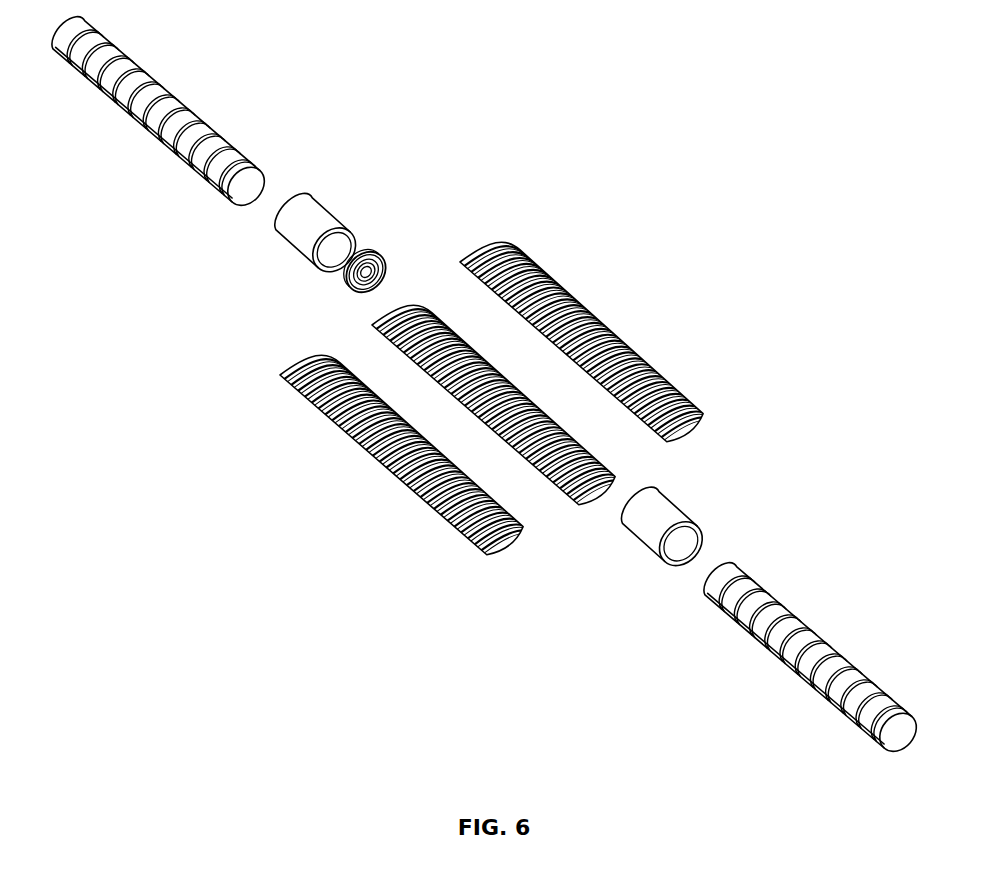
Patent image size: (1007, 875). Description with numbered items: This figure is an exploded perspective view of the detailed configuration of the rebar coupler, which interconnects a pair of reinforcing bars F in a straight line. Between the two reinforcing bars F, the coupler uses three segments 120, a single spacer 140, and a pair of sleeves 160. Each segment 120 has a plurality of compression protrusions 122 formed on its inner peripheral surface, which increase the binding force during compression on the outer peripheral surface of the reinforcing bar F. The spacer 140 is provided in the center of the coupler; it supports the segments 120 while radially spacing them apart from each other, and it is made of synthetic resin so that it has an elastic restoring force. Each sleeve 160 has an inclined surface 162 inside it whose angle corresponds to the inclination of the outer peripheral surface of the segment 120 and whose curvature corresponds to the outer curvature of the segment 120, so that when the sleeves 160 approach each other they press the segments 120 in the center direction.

The reinforcing bar F is at (206, 97).
The segment 120 is at (622, 310).
The compression protrusion 122 is at (604, 307).
The spacer 140 is at (391, 238).
The sleeve 160 is at (498, 338).
The inclined surface 162 is at (337, 256).